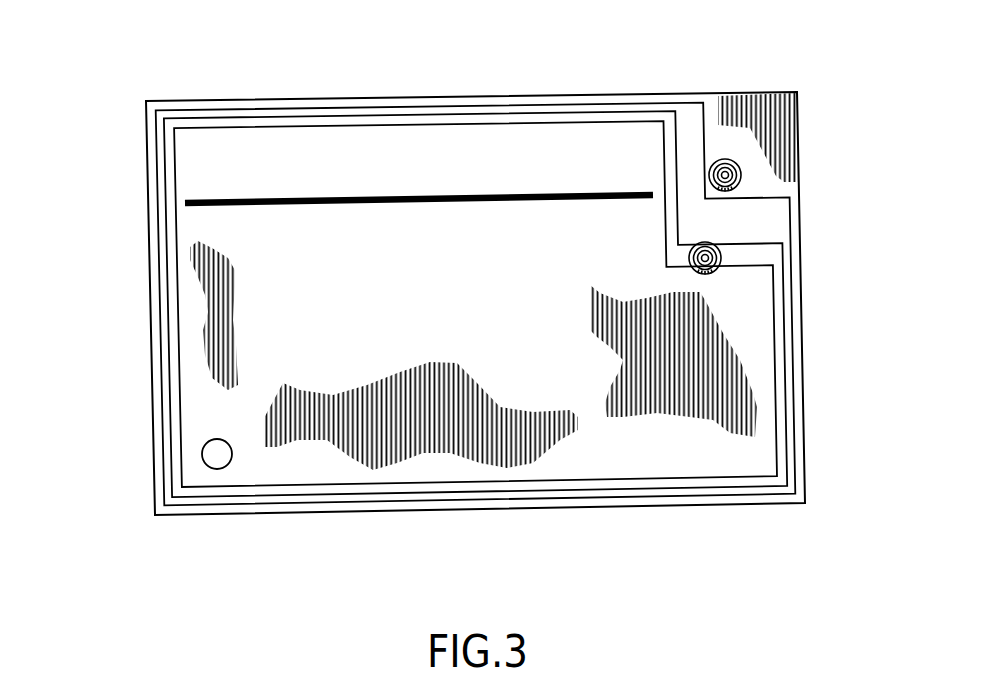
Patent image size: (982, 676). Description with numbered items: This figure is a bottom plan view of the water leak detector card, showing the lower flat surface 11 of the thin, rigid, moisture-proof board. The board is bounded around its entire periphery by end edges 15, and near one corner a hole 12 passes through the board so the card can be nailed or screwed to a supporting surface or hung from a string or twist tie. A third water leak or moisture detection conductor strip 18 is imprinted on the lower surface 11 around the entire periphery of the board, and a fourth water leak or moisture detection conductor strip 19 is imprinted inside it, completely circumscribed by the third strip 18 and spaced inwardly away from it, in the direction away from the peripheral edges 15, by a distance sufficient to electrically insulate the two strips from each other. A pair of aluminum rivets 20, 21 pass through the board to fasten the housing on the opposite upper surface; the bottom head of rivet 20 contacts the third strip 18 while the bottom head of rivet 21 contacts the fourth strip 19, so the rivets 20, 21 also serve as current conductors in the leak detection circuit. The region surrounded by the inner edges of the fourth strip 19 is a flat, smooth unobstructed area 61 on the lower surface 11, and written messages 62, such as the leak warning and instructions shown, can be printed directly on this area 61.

The lower flat surface 11 is at (247, 415).
The hole 12 is at (219, 457).
The end edges 15 is at (148, 300).
The third water leak or moisture detection conductor strip 18 is at (585, 498).
The fourth water leak or moisture detection conductor strip 19 is at (305, 490).
The rivet 20 is at (708, 163).
The rivet 21 is at (713, 263).
The flat, smooth unobstructed area 61 is at (637, 428).
The written messages 62 is at (277, 197).